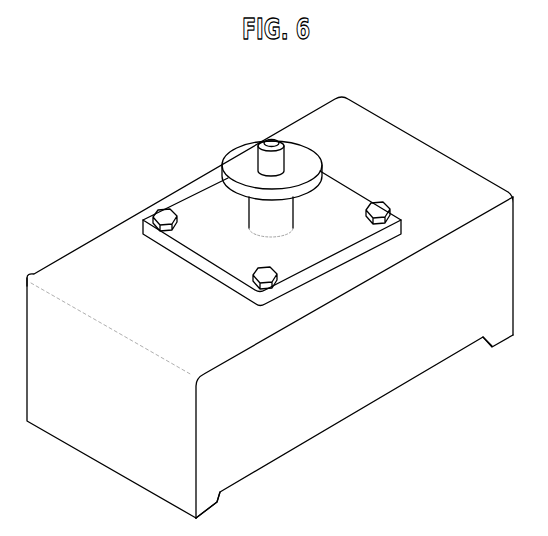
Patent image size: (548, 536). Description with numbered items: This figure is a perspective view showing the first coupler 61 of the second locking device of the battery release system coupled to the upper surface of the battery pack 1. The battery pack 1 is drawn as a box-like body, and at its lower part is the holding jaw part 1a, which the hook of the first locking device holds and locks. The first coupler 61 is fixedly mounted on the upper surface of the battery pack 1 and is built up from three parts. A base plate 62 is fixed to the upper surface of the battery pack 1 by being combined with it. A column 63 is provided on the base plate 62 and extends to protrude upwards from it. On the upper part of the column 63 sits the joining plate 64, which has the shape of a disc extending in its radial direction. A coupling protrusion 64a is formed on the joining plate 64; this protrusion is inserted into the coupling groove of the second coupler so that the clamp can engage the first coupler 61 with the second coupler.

The battery pack 1 is at (371, 376).
The holding jaw part 1a is at (218, 498).
The first coupler 61 is at (350, 174).
The base plate 62 is at (352, 206).
The column 63 is at (265, 212).
The joining plate 64 is at (296, 150).
The coupling protrusion 64a is at (268, 142).